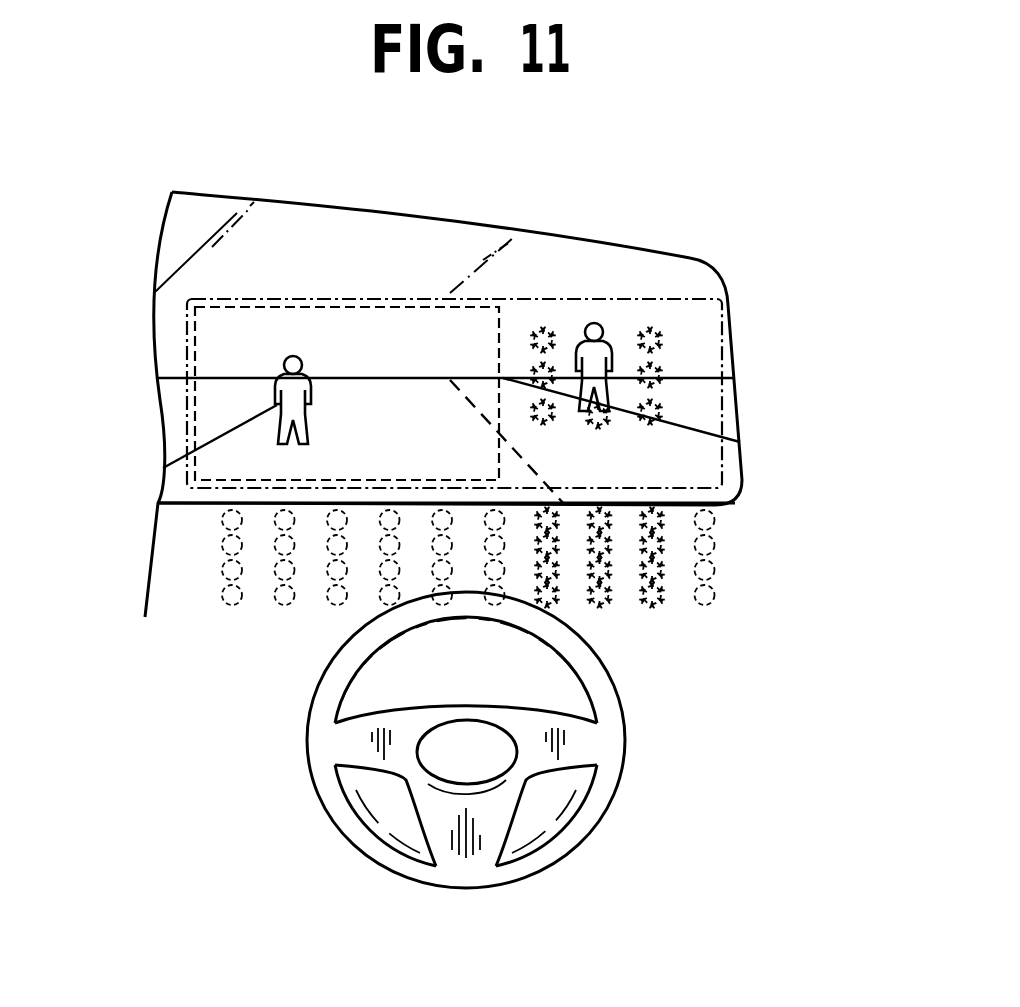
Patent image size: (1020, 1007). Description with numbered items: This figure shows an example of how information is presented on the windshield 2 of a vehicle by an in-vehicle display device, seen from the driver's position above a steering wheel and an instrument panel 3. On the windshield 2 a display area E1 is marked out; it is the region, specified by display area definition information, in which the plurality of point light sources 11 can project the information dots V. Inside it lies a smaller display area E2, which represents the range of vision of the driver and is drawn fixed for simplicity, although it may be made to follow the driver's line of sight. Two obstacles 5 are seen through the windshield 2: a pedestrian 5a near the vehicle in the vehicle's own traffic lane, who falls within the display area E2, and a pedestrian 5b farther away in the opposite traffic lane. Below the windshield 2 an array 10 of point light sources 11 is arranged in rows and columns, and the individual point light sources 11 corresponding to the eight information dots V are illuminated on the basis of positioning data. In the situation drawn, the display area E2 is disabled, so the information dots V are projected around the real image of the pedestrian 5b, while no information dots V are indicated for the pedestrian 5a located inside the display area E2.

The windshield 2 is at (637, 290).
The instrument panel 3 is at (187, 572).
The obstacle 5 is at (491, 279).
The pedestrian 5a is at (295, 350).
The pedestrian 5b is at (607, 317).
The display area E1 is at (540, 299).
The display area E2 is at (407, 299).
The information dots V is at (662, 406).
The light source array 10 is at (567, 582).
The point light sources 11 is at (714, 518).